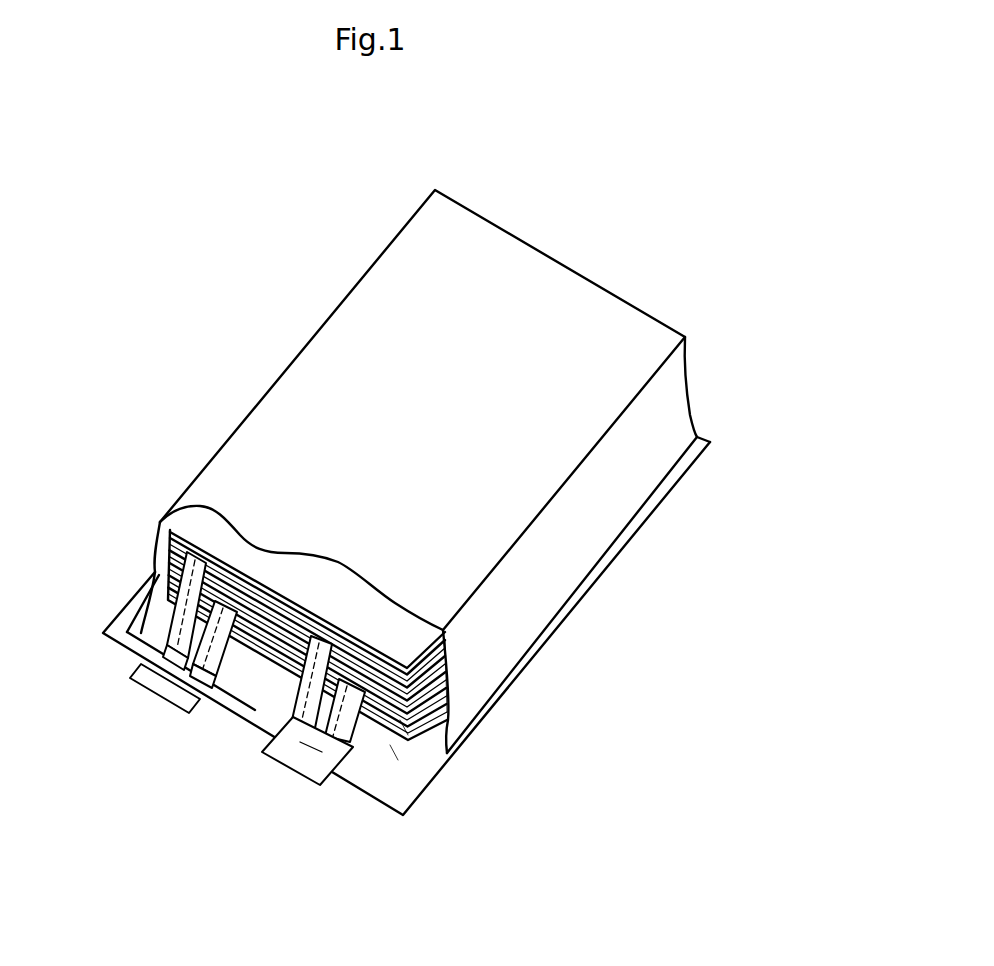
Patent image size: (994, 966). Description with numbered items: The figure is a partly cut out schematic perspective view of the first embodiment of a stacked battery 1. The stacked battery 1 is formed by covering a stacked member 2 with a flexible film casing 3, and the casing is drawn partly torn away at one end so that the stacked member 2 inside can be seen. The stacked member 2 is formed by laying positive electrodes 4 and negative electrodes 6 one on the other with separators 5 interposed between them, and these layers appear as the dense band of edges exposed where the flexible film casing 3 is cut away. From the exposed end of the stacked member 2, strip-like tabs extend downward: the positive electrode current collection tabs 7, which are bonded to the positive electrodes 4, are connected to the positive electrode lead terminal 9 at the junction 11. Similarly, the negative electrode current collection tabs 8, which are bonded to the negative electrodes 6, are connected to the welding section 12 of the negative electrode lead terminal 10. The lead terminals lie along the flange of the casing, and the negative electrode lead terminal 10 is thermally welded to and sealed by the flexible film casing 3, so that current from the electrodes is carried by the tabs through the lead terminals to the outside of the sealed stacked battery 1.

The stacked battery 1 is at (190, 194).
The stacked member 2 is at (408, 638).
The flexible film casing 3 is at (625, 317).
The positive electrode 4 is at (398, 762).
The separator 5 is at (410, 735).
The negative electrode 6 is at (450, 680).
The positive electrode current collection tab 7 is at (352, 732).
The negative electrode current collection tab 8 is at (232, 698).
The positive electrode lead terminal 9 is at (290, 757).
The negative electrode lead terminal 10 is at (150, 673).
The junction 11 is at (327, 748).
The welding section 12 is at (178, 687).